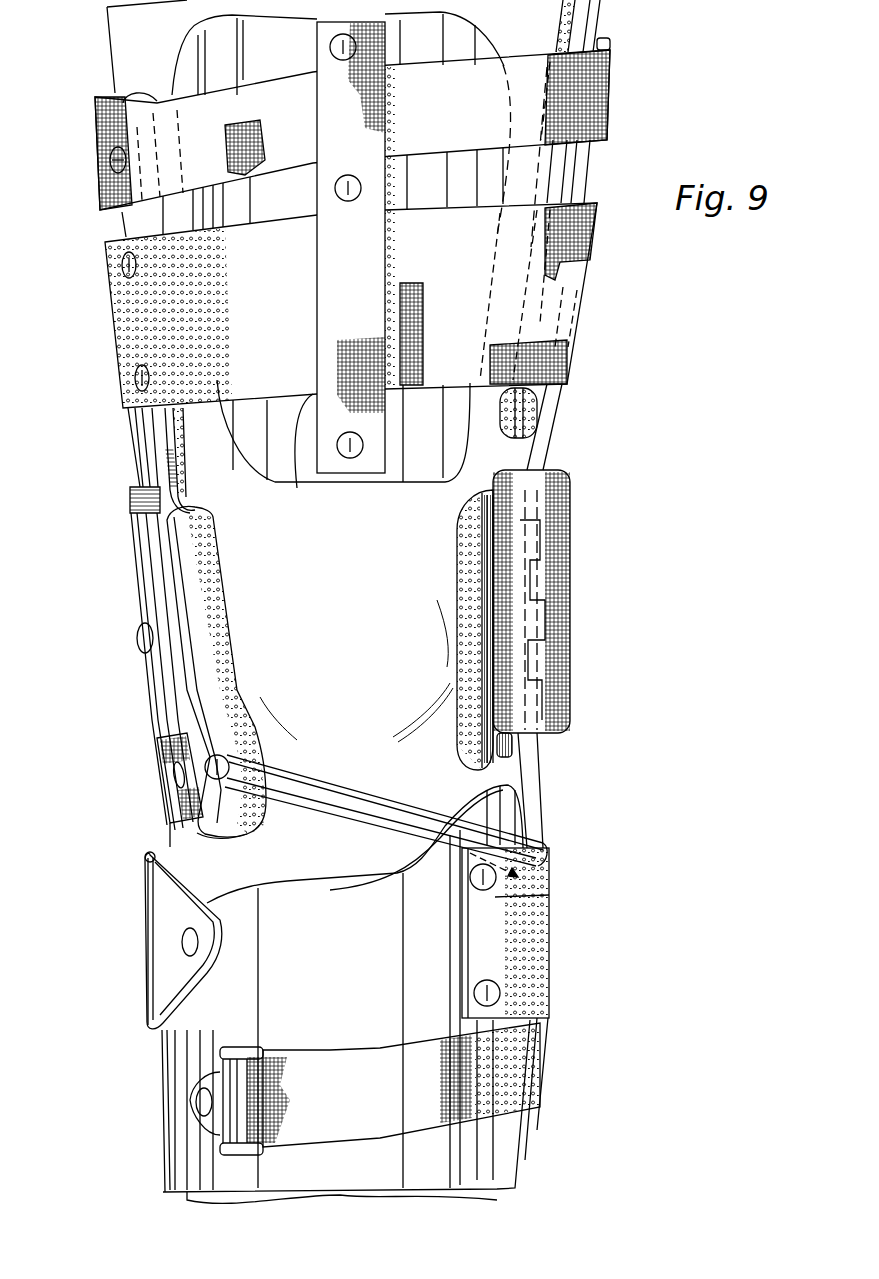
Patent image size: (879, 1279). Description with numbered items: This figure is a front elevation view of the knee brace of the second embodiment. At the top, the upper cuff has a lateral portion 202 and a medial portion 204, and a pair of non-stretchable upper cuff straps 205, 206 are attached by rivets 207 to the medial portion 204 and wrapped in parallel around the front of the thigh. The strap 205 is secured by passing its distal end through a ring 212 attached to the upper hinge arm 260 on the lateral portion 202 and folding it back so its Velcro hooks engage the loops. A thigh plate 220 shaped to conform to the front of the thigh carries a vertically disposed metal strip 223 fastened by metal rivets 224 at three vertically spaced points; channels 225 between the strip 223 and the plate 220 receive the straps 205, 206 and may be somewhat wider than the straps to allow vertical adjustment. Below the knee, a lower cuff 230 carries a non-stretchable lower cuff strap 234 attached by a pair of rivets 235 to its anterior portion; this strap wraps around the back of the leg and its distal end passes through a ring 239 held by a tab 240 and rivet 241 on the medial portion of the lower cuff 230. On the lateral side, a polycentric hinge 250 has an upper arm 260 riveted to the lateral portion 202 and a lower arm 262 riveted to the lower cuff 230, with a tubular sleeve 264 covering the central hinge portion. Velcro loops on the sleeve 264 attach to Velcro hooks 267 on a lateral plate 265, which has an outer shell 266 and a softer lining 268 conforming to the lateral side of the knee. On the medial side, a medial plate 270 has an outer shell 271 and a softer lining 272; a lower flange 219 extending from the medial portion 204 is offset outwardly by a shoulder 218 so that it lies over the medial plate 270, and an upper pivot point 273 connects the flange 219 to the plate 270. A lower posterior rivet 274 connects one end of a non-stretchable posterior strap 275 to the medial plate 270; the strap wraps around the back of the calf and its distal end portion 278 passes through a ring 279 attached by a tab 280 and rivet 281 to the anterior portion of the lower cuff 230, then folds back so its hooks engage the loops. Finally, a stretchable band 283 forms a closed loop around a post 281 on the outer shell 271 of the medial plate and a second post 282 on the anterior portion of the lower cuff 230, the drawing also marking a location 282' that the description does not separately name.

The lateral portion 202 is at (602, 15).
The medial portion 204 is at (127, 430).
The upper cuff strap 205 is at (227, 100).
The upper cuff strap 206 is at (207, 407).
The rivets 207 is at (110, 160).
The ring 212 is at (610, 46).
The shoulder 218 is at (130, 498).
The lower flange 219 is at (140, 549).
The thigh plate 220 is at (410, 482).
The metal strip 223 is at (342, 256).
The metal rivets 224 is at (358, 42).
The channels 225 is at (316, 72).
The lower cuff 230 is at (323, 890).
The lower cuff strap 234 is at (551, 926).
The rivets 235 is at (551, 893).
The ring 239 is at (152, 862).
The tab 240 is at (163, 893).
The rivet 241 is at (184, 944).
The polycentric hinge 250 is at (560, 675).
The upper arm 260 is at (552, 402).
The lower arm 262 is at (537, 800).
The tubular sleeve 264 is at (571, 498).
The lateral plate 265 is at (512, 746).
The outer shell 266 is at (487, 551).
The Velcro hooks 267 is at (500, 612).
The softer lining 268 is at (468, 579).
The medial plate 270 is at (160, 714).
The outer shell 271 is at (197, 668).
The softer lining 272 is at (217, 614).
The upper pivot point 273 is at (138, 638).
The lower posterior rivet 274 is at (173, 778).
The posterior strap 275 is at (168, 808).
The distal end portion 278 is at (393, 1053).
The ring 279 is at (243, 1046).
The tab 280 is at (200, 1126).
The rivet 281 is at (198, 1097).
The second post or screw 282 is at (164, 744).
The pivot end 282' is at (549, 846).
The stretchable band 283 is at (401, 774).